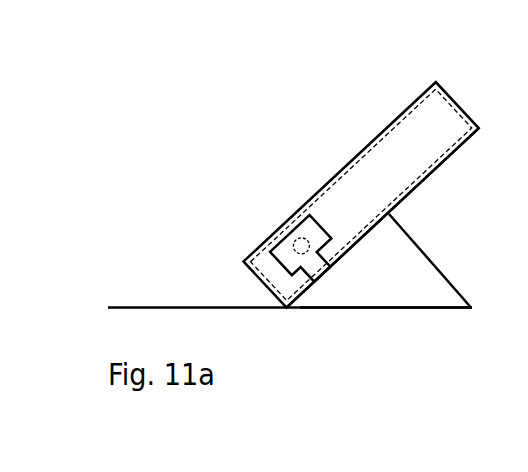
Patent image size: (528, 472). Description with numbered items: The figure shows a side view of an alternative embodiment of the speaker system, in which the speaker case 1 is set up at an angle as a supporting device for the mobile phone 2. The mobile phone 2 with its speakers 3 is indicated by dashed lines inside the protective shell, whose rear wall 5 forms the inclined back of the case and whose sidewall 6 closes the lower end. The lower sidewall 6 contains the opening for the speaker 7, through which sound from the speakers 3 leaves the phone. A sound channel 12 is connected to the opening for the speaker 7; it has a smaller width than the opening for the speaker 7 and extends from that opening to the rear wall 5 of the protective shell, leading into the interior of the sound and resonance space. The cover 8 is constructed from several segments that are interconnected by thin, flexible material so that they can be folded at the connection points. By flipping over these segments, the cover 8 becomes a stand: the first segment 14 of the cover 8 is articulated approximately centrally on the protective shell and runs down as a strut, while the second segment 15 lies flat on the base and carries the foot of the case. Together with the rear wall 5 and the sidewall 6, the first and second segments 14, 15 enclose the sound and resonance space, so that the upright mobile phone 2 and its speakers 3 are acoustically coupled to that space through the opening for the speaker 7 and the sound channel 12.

The speaker case 1 is at (210, 132).
The mobile phone 2 is at (261, 173).
The speakers 3 is at (273, 237).
The rear wall 5 is at (0, 0).
The sidewall 6 is at (325, 187).
The opening for the speaker 7 is at (305, 230).
The cover 8 is at (148, 308).
The sound channel 12 is at (345, 256).
The first segment 14 is at (455, 280).
The second segment 15 is at (355, 308).